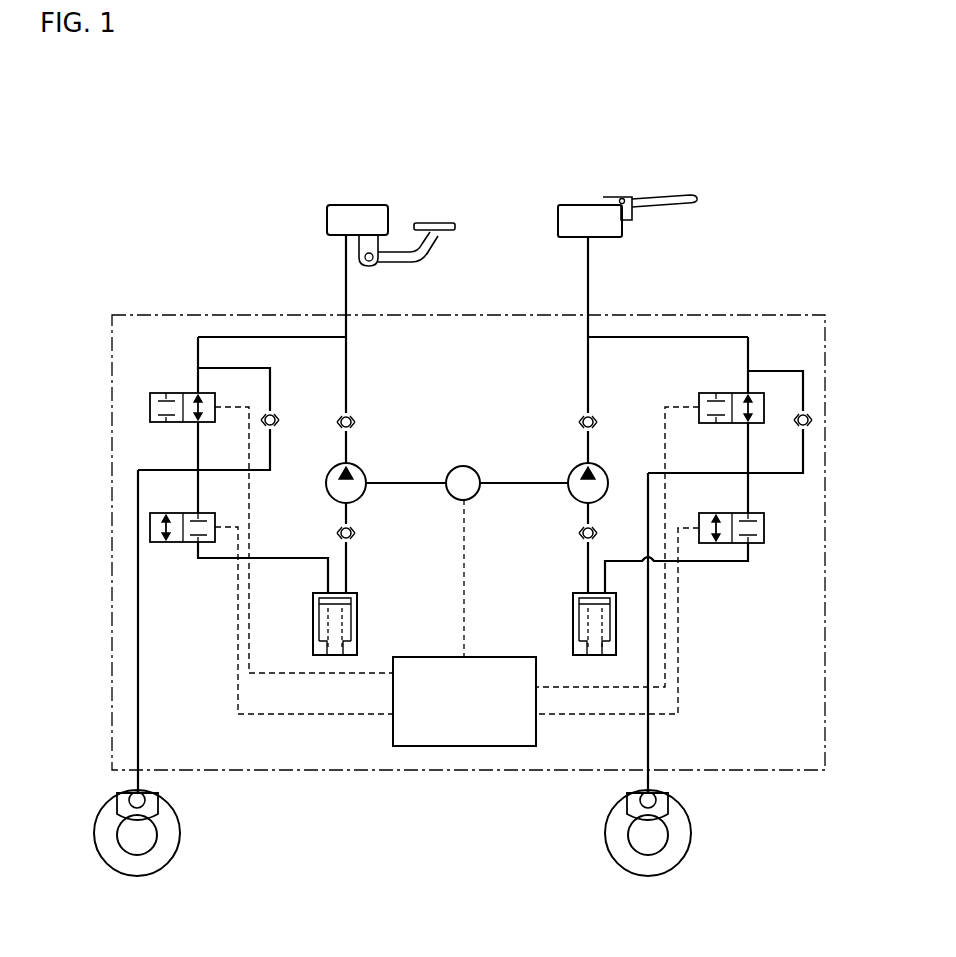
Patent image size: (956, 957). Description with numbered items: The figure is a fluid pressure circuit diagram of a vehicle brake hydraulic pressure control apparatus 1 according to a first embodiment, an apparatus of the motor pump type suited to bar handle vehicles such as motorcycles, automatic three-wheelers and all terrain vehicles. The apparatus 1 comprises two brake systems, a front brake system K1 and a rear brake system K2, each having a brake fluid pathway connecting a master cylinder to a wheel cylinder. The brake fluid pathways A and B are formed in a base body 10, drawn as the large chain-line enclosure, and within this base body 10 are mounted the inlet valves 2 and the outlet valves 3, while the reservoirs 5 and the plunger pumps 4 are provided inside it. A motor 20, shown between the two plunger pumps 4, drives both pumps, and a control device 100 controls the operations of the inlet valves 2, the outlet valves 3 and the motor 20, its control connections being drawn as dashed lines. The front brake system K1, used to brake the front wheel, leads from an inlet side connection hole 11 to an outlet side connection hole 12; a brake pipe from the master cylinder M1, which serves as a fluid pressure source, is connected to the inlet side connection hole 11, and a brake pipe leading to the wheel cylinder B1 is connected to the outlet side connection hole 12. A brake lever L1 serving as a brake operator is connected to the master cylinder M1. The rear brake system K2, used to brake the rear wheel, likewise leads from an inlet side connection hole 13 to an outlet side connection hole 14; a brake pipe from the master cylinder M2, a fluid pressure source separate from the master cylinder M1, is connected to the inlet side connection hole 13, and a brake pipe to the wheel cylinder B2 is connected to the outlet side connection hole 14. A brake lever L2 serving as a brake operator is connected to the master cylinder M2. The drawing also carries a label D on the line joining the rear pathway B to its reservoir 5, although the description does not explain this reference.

The vehicle brake hydraulic pressure control apparatus 1 is at (505, 164).
The base body 10 is at (812, 312).
The inlet valves 2 is at (170, 392).
The outlet valves 3 is at (216, 520).
The plunger pumps 4 is at (354, 470).
The reservoirs 5 is at (358, 607).
The inlet side connection hole 11 is at (586, 318).
The outlet side connection hole 12 is at (640, 782).
The inlet side connection hole 13 is at (348, 318).
The outlet side connection hole 14 is at (150, 782).
The motor 20 is at (464, 466).
The control device 100 is at (488, 718).
The brake fluid pathway A is at (682, 336).
The brake fluid pathway B is at (212, 336).
The drain line D is at (346, 575).
The front brake system K1 is at (752, 334).
The rear brake system K2 is at (183, 338).
The brake lever L1 is at (666, 210).
The brake lever L2 is at (438, 256).
The master cylinder M1 is at (604, 244).
The master cylinder M2 is at (322, 226).
The wheel cylinder B1 is at (668, 798).
The wheel cylinder B2 is at (122, 796).